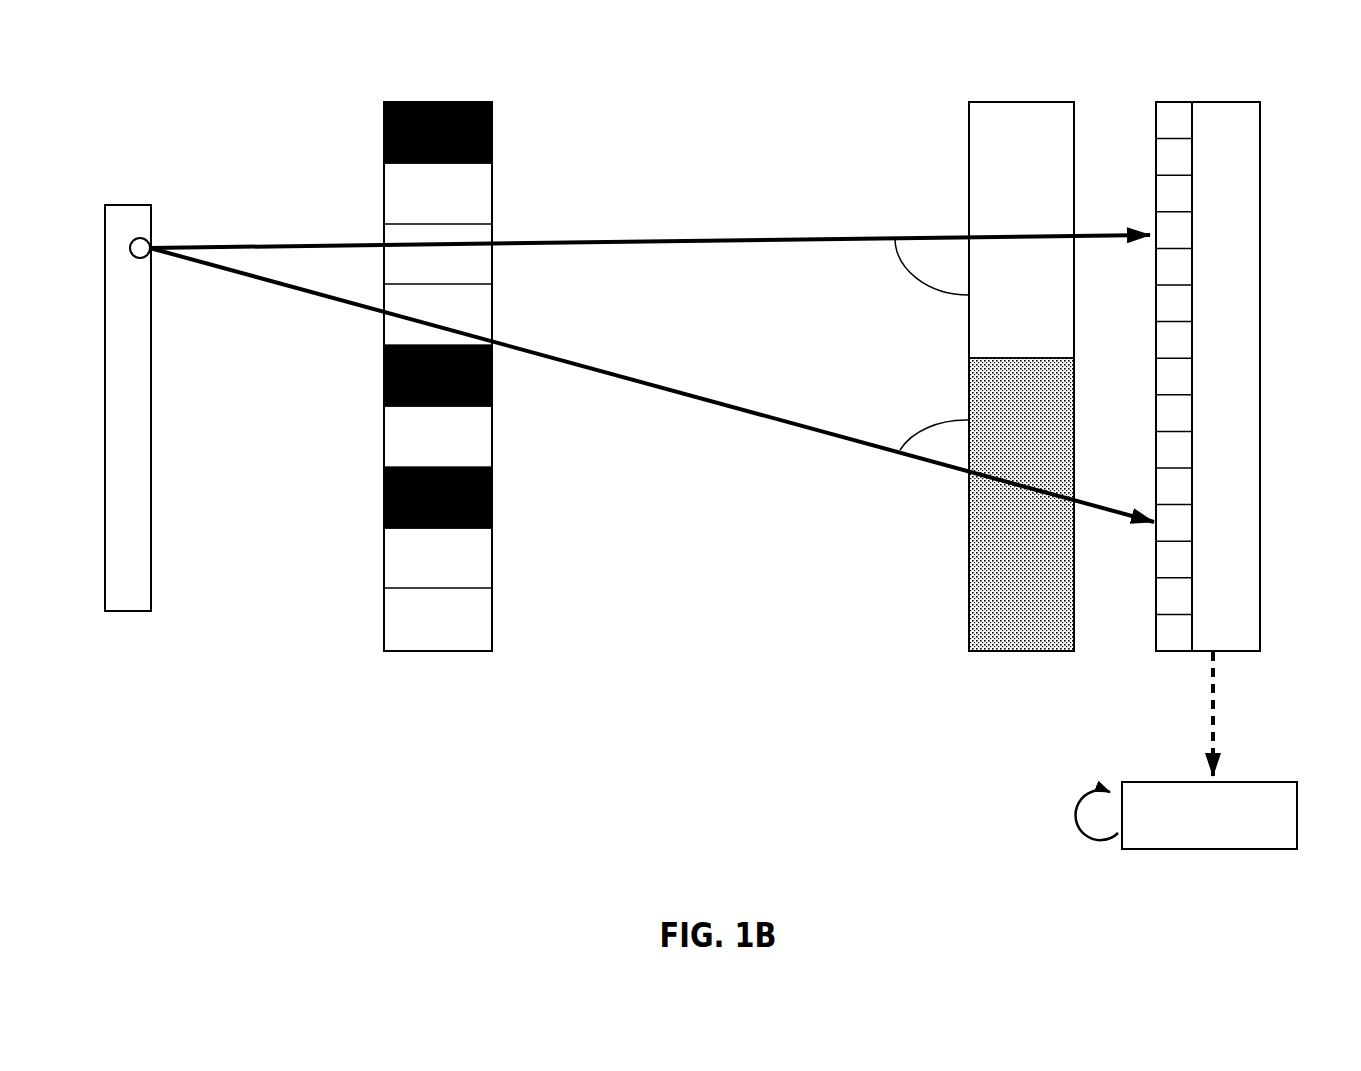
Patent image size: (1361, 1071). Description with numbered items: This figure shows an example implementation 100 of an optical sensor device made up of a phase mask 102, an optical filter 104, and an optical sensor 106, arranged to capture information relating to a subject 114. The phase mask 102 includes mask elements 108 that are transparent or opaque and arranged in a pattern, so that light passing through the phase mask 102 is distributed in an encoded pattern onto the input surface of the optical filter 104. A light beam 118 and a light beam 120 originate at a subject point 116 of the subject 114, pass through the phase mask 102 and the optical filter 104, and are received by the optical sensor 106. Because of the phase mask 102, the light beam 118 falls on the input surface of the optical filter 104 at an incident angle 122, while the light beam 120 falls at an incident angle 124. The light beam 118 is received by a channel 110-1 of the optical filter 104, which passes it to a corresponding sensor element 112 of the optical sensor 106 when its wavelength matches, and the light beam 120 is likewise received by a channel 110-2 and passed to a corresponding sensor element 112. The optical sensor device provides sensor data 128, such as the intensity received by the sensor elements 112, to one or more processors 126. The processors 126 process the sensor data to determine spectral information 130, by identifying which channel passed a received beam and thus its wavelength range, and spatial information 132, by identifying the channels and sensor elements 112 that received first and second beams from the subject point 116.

The example implementation 100 is at (237, 57).
The phase mask 102 is at (439, 352).
The optical filter 104 is at (1027, 352).
The optical sensor 106 is at (1212, 352).
The mask elements 108 is at (382, 512).
The channel 110-1 is at (1011, 159).
The channel 110-2 is at (1011, 588).
The sensor element 112 is at (1168, 598).
The subject 114 is at (138, 382).
The subject point 116 is at (143, 262).
The light beam 118 is at (650, 213).
The light beam 120 is at (652, 385).
The incident angle 122 is at (948, 259).
The incident angle 124 is at (941, 459).
The processors 126 is at (1209, 815).
The sensor data 128 is at (1283, 714).
The spectral information 130 is at (993, 804).
The spatial information 132 is at (970, 862).